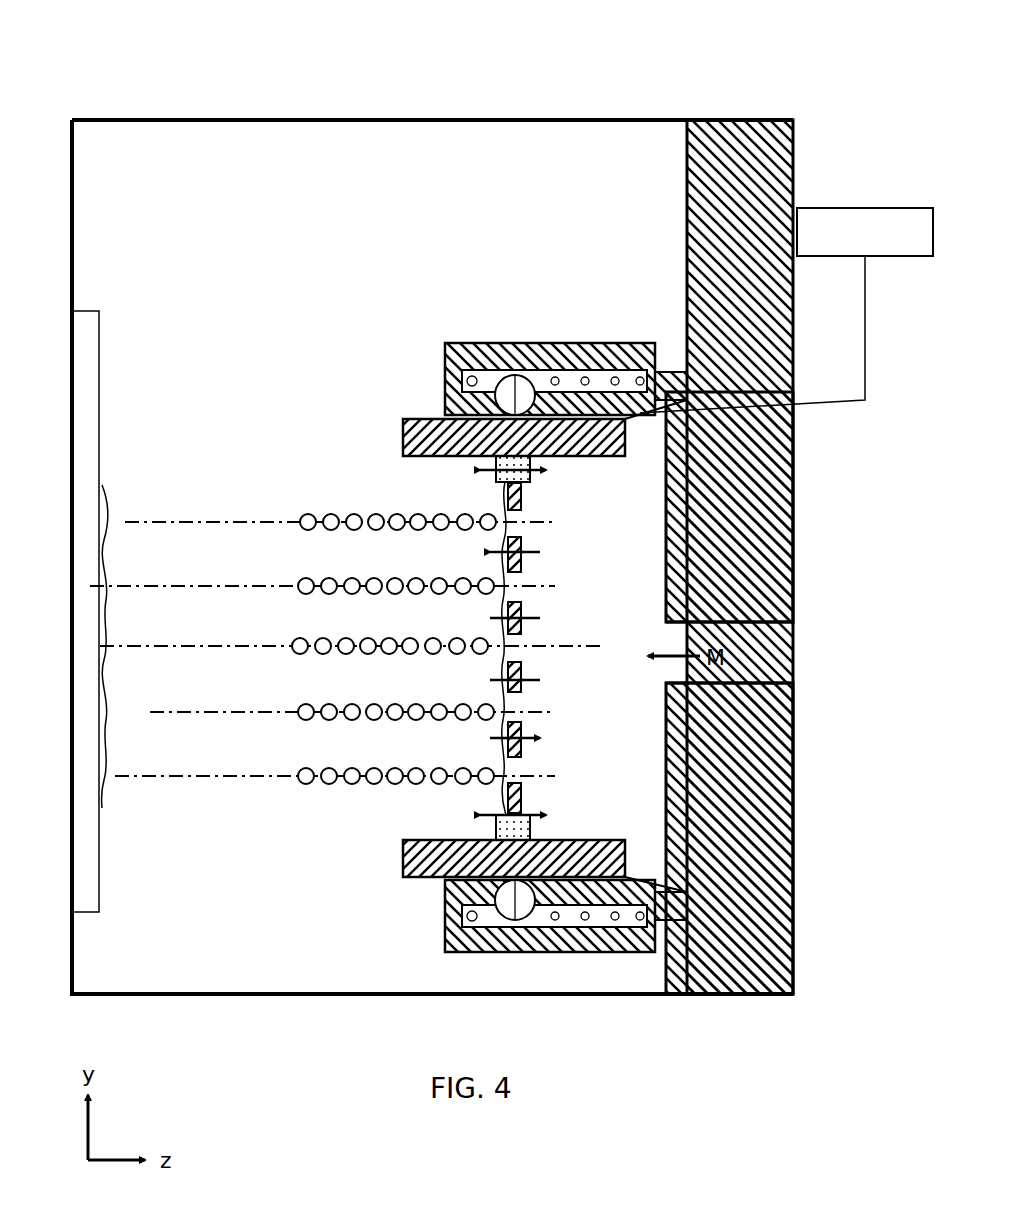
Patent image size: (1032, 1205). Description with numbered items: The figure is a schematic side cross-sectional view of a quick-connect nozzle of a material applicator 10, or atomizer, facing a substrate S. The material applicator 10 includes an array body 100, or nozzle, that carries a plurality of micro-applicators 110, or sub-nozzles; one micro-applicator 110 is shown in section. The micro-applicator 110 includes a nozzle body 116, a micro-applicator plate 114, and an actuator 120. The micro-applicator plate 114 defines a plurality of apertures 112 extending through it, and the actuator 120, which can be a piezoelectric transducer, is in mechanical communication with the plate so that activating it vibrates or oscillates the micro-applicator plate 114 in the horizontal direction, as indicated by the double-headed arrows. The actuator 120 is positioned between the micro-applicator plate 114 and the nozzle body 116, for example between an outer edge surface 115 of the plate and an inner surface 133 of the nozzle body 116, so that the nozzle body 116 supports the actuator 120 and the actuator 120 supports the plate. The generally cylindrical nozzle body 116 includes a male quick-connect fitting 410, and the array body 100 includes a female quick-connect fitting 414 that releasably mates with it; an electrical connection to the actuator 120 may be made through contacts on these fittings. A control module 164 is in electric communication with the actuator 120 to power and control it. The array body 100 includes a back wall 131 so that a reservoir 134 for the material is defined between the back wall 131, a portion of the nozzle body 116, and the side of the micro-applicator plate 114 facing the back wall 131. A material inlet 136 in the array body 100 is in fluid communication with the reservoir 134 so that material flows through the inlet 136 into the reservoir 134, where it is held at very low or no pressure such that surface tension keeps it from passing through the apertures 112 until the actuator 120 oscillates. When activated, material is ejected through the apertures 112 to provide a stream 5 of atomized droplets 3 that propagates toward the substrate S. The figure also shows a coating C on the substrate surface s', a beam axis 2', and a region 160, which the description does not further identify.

The material applicator 10 is at (224, 150).
The array body 100 is at (685, 152).
The reservoir 134 is at (738, 512).
The material inlet 136 is at (790, 684).
The gas inlet opening 160 is at (796, 625).
The control module 164 is at (865, 208).
The female quick-connect fitting 414 is at (477, 340).
The male quick-connect fitting 410 is at (404, 420).
The actuator 120 is at (494, 475).
The apertures 112 is at (518, 538).
The micro-applicator plate 114 is at (503, 562).
The outer edge surface 115 is at (522, 822).
The micro-applicator 110 is at (392, 864).
The nozzle body 116 is at (416, 878).
The inner surface 133 is at (500, 840).
The back wall 131 is at (667, 830).
The substrate S is at (65, 392).
The coating C is at (110, 512).
The substrate surface s' is at (57, 654).
The atomized droplets 3 is at (306, 513).
The stream 5 is at (336, 508).
The beam axis 2' is at (240, 623).